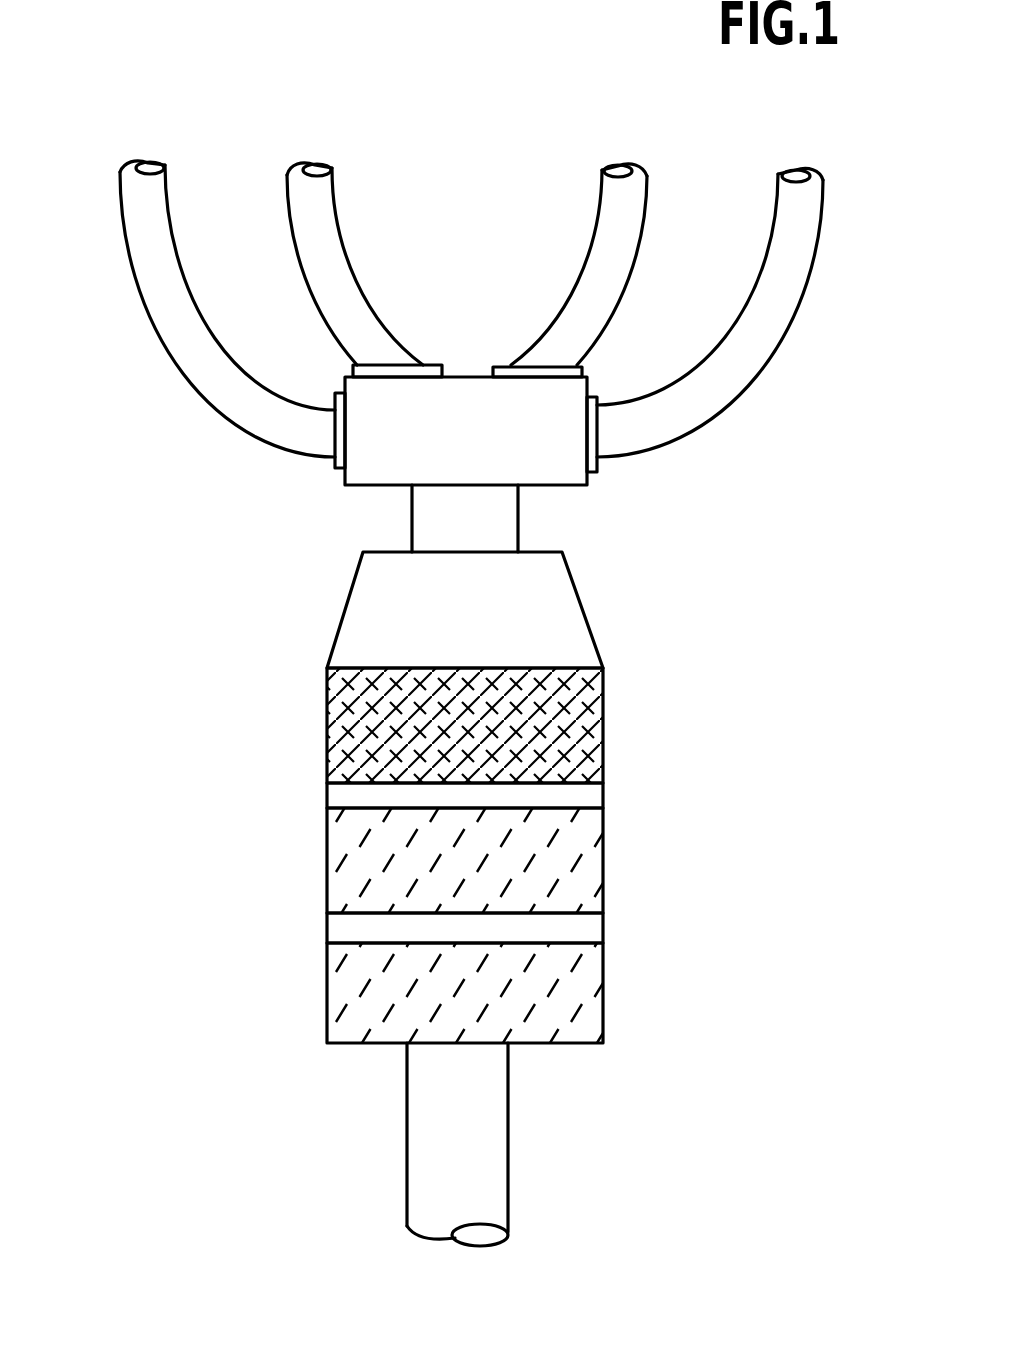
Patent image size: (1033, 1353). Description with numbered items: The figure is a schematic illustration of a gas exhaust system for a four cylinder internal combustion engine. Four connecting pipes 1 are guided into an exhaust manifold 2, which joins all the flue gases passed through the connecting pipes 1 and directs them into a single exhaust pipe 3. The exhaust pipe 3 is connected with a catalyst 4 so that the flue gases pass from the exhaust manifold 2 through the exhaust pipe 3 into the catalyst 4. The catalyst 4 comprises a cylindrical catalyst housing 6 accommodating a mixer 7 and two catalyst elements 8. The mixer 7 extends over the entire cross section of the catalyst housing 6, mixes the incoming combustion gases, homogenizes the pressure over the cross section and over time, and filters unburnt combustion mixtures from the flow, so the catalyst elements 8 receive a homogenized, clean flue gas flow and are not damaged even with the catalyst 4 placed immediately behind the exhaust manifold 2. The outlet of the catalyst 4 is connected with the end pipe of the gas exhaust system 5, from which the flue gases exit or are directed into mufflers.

The connecting pipes 1 is at (126, 207).
The exhaust manifold 2 is at (540, 440).
The exhaust pipe 3 is at (495, 518).
The catalyst 4 is at (488, 797).
The end pipe of the gas exhaust system 5 is at (487, 1182).
The catalyst housing 6 is at (557, 621).
The mixer 7 is at (340, 704).
The catalyst elements 8 is at (583, 872).